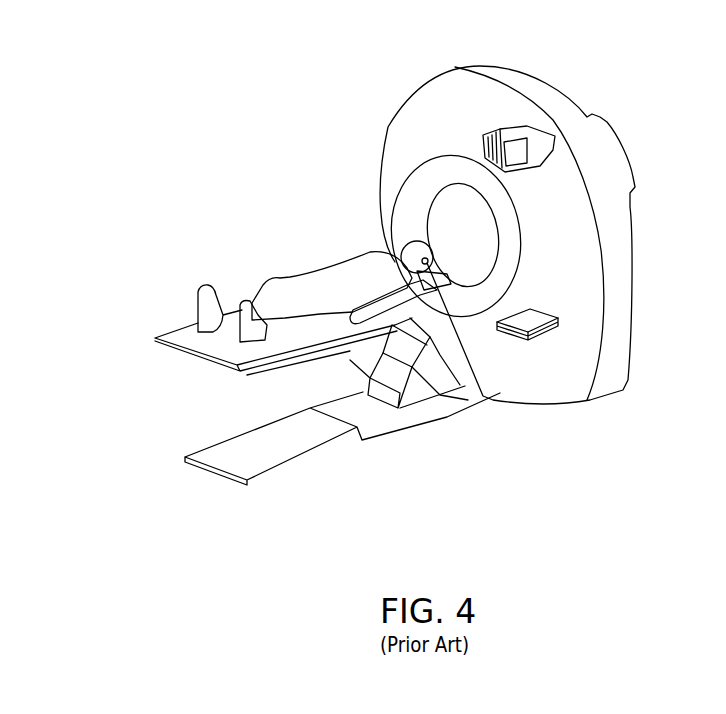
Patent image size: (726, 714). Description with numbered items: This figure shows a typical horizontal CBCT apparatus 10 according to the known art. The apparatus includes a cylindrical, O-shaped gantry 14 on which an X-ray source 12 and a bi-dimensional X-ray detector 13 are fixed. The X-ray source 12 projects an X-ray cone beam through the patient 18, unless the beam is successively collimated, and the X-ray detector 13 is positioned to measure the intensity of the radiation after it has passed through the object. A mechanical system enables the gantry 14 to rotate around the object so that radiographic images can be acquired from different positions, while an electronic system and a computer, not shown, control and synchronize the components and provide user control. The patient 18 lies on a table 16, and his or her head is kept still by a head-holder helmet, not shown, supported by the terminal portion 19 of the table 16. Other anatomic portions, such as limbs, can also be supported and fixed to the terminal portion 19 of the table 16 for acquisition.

The horizontal CBCT apparatus 10 is at (398, 71).
The X-ray source 12 is at (540, 140).
The X-ray detector 13 is at (557, 320).
The cylindrical gantry 14 is at (388, 127).
The table 16 is at (183, 330).
The patient 18 is at (363, 270).
The terminal portion of the table 19 is at (428, 290).